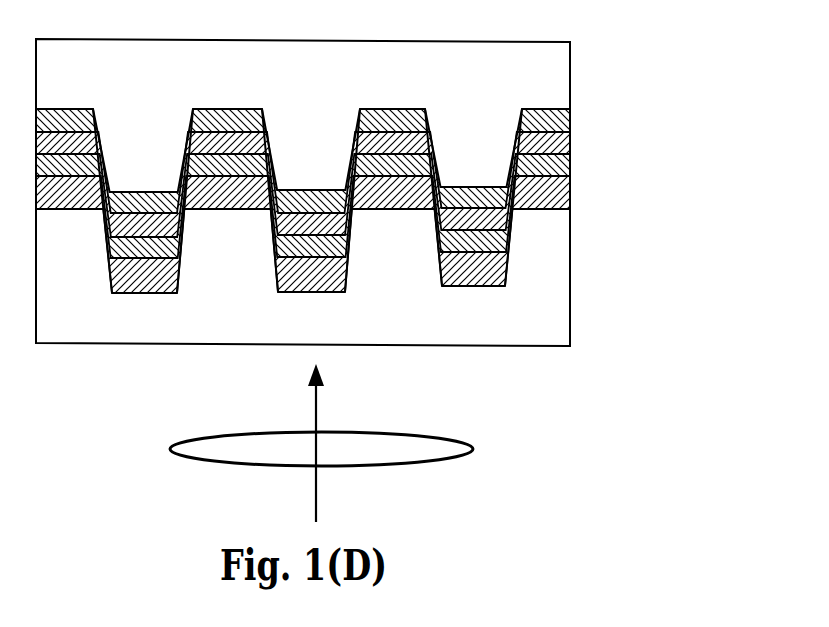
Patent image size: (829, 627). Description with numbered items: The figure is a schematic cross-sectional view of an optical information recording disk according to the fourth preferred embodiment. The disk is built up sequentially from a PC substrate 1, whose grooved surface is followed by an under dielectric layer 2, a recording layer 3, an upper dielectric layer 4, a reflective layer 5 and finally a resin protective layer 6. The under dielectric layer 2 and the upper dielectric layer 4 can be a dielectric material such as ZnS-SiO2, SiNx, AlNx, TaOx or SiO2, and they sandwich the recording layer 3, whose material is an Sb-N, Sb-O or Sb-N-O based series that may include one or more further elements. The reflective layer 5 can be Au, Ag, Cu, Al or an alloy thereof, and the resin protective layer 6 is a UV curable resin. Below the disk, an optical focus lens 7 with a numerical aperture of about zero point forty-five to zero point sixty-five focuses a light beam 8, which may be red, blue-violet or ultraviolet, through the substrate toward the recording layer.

The PC substrate 1 is at (560, 325).
The under dielectric layer 2 is at (562, 193).
The recording layer 3 is at (562, 167).
The upper dielectric layer 4 is at (562, 145).
The reflective layer 5 is at (562, 122).
The resin protective layer 6 is at (560, 80).
The optical focus lens 7 is at (448, 437).
The light beam 8 is at (317, 503).